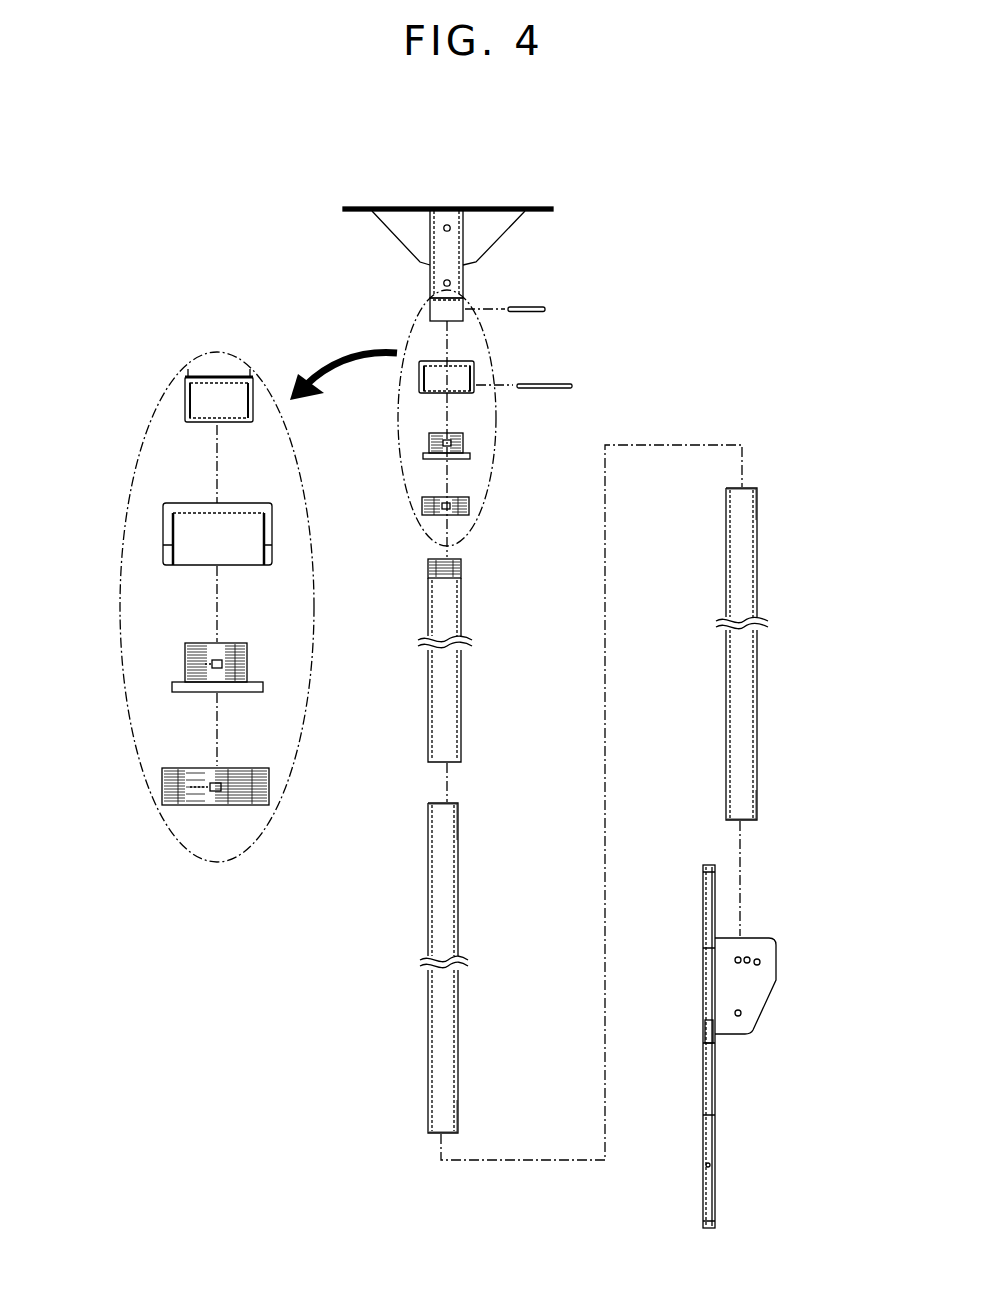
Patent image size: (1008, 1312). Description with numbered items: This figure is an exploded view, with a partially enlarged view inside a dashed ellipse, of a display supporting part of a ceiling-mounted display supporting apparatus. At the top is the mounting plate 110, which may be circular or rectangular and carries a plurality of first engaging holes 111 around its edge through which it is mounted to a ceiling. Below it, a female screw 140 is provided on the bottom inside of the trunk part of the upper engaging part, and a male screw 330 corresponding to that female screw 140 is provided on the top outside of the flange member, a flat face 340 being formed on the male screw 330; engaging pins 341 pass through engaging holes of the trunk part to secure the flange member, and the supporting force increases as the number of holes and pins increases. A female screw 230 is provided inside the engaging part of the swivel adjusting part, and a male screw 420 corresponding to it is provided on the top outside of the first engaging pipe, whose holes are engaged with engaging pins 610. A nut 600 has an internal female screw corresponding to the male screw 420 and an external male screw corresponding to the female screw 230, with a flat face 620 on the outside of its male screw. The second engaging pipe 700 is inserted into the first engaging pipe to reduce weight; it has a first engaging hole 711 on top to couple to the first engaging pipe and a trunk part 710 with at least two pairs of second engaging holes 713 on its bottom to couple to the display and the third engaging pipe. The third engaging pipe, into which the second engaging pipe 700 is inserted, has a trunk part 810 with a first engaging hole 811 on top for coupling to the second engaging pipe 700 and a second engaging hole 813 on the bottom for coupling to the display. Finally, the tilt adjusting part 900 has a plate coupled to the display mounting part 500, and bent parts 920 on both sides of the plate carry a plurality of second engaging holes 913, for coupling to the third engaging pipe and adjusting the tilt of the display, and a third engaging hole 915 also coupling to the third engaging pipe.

The mounting plate 110 is at (410, 206).
The first engaging holes 111 is at (537, 206).
The female screw 140 is at (185, 388).
The female screw 230 is at (163, 540).
The male screw 330 is at (172, 688).
The flat face 340 is at (185, 663).
The engaging pins 341 is at (547, 309).
The male screw 420 is at (463, 565).
The display mounting part 500 is at (722, 1088).
The nut 600 is at (172, 608).
The engaging pins 610 is at (549, 380).
The flat face 620 is at (162, 782).
The second engaging pipe 700 is at (435, 968).
The trunk part 710 is at (450, 893).
The first engaging hole 711 is at (459, 822).
The second engaging holes 713 is at (459, 1110).
The trunk part 810 is at (750, 568).
The first engaging hole 811 is at (758, 508).
The second engaging hole 813 is at (758, 795).
The tilt adjusting part 900 is at (784, 939).
The second engaging holes 913 is at (760, 961).
The third engaging hole 915 is at (742, 1013).
The bent parts 920 is at (762, 947).